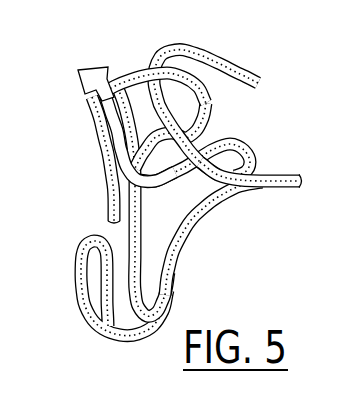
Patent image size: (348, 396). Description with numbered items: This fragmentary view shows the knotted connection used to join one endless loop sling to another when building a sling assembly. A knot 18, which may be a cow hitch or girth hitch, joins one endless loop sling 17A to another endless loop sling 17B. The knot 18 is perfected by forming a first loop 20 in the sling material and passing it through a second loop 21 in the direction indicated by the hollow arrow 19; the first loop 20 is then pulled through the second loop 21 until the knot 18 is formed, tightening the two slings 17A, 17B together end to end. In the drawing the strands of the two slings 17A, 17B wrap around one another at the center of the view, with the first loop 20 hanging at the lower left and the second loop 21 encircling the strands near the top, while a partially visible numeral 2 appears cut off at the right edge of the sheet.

The knot 18 is at (262, 50).
The arrow 19 is at (84, 95).
The first loop 20 is at (75, 260).
The second loop 21 is at (125, 71).
The endless loop sling 17A is at (186, 233).
The endless loop sling 17B is at (282, 174).
The suture 2 is at (339, 255).